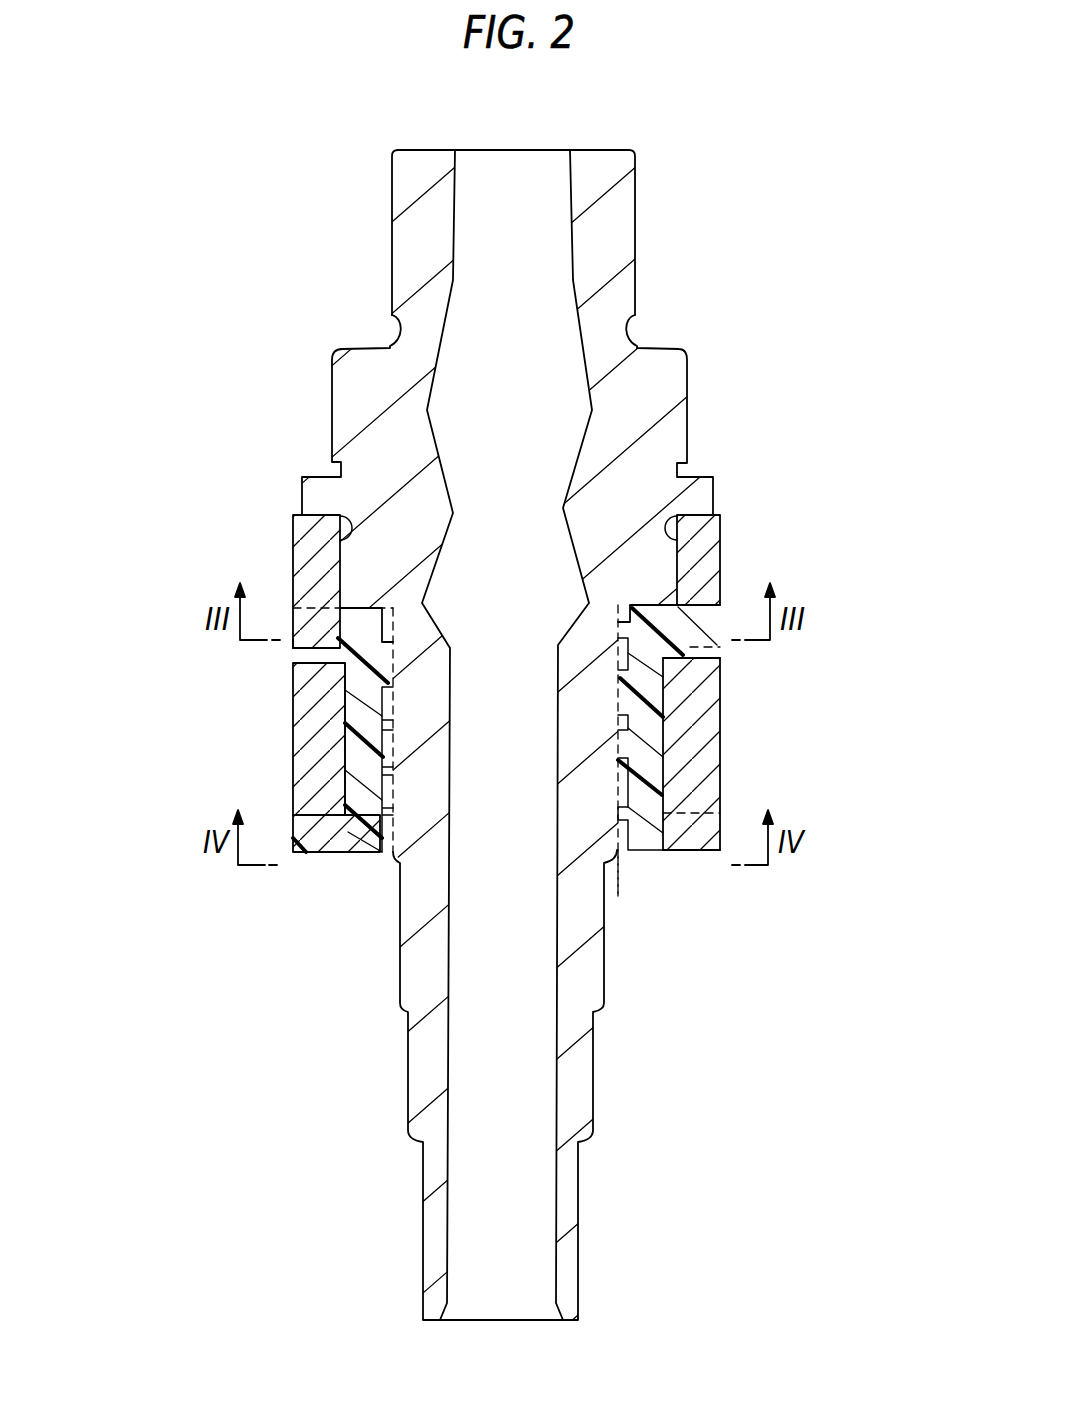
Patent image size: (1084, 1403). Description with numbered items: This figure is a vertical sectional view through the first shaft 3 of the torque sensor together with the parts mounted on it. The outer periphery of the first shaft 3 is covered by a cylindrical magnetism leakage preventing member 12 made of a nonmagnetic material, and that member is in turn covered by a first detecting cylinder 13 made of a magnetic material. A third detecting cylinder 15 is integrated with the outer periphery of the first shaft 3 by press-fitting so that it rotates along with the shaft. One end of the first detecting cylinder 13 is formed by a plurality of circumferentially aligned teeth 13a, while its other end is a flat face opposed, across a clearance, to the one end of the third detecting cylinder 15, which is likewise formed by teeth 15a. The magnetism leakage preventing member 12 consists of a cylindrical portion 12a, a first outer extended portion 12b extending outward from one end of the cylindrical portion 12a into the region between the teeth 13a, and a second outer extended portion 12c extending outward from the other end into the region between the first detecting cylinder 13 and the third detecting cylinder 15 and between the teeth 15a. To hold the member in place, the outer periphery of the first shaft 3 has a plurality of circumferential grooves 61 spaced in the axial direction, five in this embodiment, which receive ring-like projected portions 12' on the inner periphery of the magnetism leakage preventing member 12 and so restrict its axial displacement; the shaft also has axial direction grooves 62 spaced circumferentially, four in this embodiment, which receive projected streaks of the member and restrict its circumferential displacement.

The first shaft 3 is at (640, 475).
The third detecting cylinder 15 is at (710, 540).
The teeth 15a is at (290, 640).
The magnetism leakage preventing member 12 is at (541, 750).
The ring-like projected portions 12' is at (592, 713).
The cylindrical portion 12a is at (355, 712).
The first outer extended portion 12b is at (305, 830).
The second outer extended portion 12c is at (710, 648).
The first detecting cylinder 13 is at (700, 735).
The teeth 13a is at (697, 842).
The circumferential grooves 61 is at (397, 672).
The axial direction grooves 62 is at (624, 889).